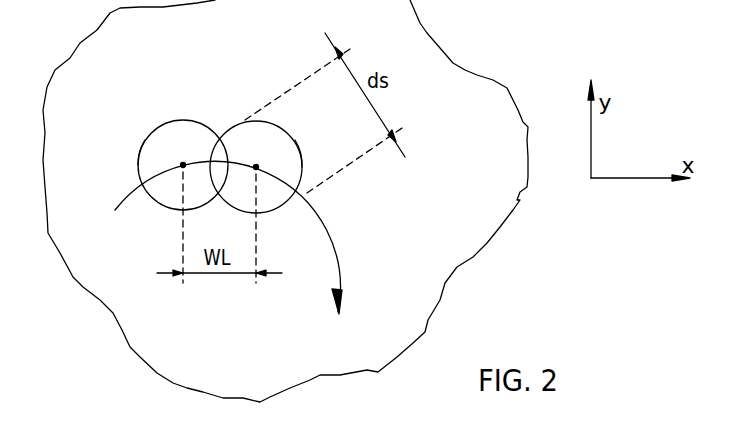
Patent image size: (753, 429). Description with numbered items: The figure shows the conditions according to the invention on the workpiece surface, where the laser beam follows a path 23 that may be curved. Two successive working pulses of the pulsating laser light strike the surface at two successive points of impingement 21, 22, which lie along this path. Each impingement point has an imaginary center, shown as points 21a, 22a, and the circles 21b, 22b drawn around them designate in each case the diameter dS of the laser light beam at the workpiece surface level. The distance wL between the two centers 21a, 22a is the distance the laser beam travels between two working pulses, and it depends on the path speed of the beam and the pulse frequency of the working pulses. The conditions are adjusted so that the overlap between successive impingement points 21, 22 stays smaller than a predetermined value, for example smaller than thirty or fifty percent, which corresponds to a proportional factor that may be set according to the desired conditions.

The point of impingement 21 is at (178, 130).
The center of point of impingement 21a is at (183, 165).
The circle designating laser beam diameter 21b is at (140, 163).
The point of impingement 22 is at (233, 137).
The center of point of impingement 22a is at (256, 167).
The circle designating laser beam diameter 22b is at (300, 147).
The path of the laser beam 23 is at (332, 233).